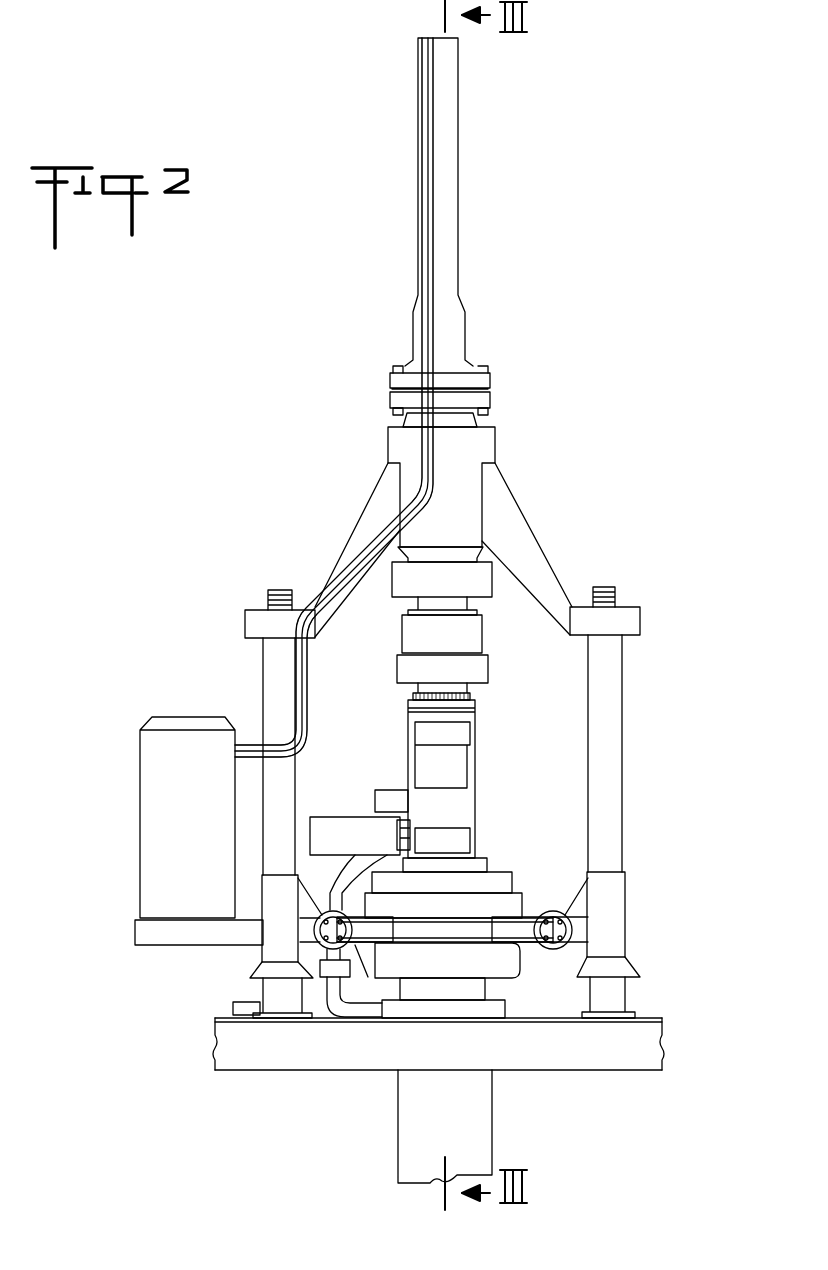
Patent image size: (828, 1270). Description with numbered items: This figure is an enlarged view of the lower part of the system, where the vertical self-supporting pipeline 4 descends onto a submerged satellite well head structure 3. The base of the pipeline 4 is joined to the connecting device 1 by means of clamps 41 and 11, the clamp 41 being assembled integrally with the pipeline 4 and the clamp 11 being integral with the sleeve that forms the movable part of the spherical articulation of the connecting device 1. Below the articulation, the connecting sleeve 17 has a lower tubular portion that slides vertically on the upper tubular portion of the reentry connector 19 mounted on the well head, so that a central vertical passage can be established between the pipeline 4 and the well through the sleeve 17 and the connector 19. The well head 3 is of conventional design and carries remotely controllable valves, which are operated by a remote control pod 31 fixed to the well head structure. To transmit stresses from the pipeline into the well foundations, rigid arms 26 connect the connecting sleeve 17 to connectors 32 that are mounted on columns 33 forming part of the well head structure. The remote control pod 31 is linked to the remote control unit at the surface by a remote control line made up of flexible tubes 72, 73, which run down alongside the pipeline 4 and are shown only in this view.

The connecting device 1 is at (505, 440).
The well head structure 3 is at (505, 800).
The vertical self-supporting pipeline 4 is at (438, 172).
The clamp 11 is at (390, 400).
The sleeve 17 is at (388, 448).
The reentry connector 19 is at (397, 608).
The rigid arms 26 is at (366, 525).
The remote control pod 31 is at (152, 802).
The connectors 32 is at (248, 622).
The columns 33 is at (275, 678).
The clamp 41 is at (480, 378).
The flexible tube 72 is at (248, 742).
The flexible tube 73 is at (292, 737).